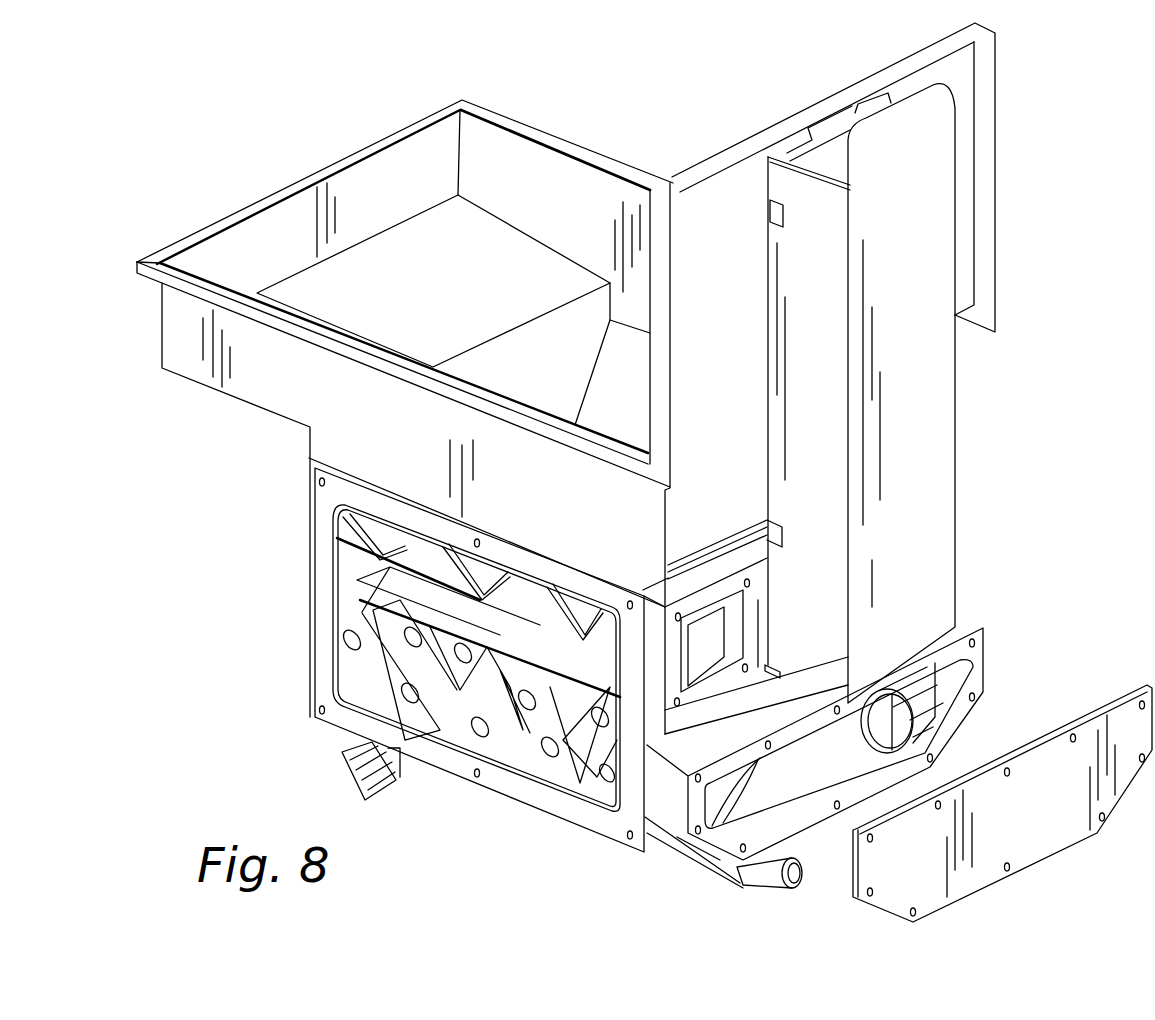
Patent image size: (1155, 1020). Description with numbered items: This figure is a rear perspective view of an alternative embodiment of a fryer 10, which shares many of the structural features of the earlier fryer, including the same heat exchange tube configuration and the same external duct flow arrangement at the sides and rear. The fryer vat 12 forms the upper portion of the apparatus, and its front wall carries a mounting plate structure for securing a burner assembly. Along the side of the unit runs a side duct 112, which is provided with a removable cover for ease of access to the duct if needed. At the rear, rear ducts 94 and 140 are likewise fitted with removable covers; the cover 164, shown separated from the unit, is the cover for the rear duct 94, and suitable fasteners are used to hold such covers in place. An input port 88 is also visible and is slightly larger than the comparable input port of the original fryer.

The fryer 10 is at (222, 143).
The fryer vat 12 is at (590, 322).
The input port 88 is at (770, 875).
The rear duct 94 is at (677, 797).
The side duct 112 is at (322, 620).
The rear duct 140 is at (667, 590).
The cover 164 is at (1033, 818).